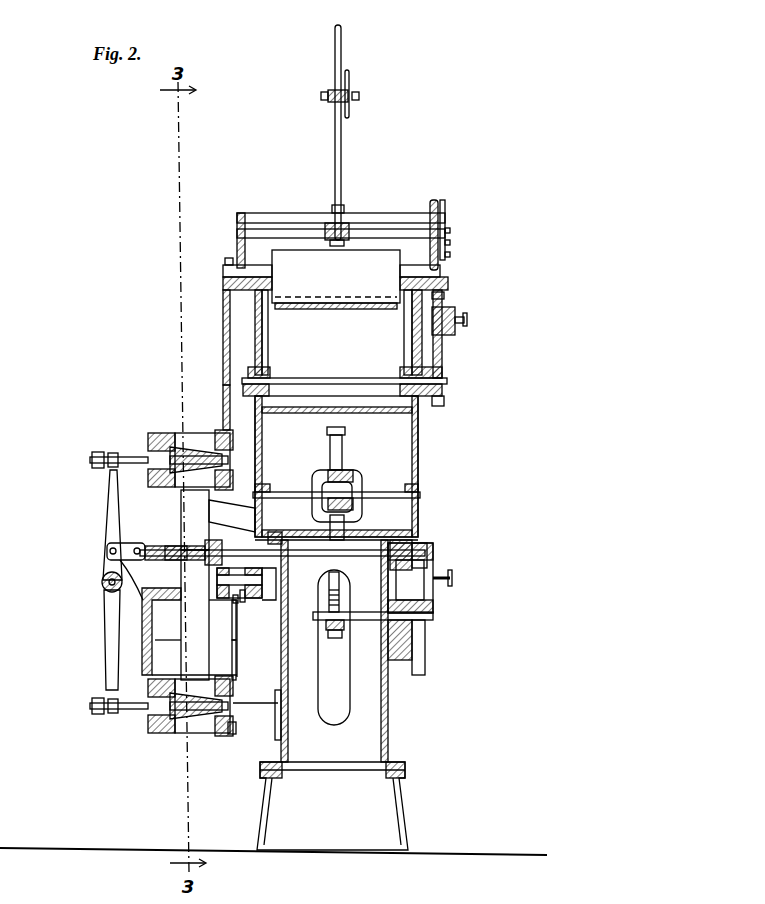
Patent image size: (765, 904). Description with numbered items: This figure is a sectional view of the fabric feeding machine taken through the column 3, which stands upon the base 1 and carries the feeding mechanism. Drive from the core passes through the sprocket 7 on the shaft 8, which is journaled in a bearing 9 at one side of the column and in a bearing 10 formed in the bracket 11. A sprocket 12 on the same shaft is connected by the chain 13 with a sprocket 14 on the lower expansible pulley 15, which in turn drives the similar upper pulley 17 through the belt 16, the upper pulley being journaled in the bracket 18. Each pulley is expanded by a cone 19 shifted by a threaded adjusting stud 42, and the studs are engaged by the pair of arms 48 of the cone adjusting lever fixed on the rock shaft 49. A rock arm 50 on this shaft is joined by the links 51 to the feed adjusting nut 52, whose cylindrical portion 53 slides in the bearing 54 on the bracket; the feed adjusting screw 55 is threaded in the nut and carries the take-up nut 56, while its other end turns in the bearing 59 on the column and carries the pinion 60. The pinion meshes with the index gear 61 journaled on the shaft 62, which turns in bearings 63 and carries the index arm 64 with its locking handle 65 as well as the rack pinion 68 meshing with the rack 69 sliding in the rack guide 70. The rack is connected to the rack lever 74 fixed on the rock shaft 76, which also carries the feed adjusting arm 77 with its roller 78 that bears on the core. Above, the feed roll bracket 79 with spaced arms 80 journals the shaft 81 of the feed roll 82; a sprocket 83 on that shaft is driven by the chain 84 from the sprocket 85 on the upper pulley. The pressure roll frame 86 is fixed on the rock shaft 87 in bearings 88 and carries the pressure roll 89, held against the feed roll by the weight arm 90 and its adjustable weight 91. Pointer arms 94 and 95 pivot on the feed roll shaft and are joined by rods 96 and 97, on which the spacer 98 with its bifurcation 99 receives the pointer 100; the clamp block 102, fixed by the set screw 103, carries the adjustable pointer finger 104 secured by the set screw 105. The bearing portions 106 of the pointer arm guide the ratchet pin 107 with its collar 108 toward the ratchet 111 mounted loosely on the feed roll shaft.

The base 1 is at (404, 812).
The column 3 is at (388, 744).
The sprocket 7 is at (237, 601).
The shaft 8 is at (265, 580).
The bearing 9 is at (243, 603).
The bearing 10 is at (196, 633).
The bracket 11 is at (143, 632).
The sprocket 12 is at (235, 606).
The chain 13 is at (236, 663).
The sprocket 14 is at (232, 734).
The pulley 15 is at (216, 742).
The belt 16 is at (180, 646).
The pulley 17 is at (165, 432).
The bracket 18 is at (237, 498).
The cone 19 is at (194, 430).
The threaded adjusting stud 42 is at (105, 456).
The arms of the cone adjusting lever 48 is at (110, 511).
The rock shaft 49 is at (102, 582).
The rock arm 50 is at (104, 572).
The links 51 is at (110, 548).
The feed adjusting nut 52 is at (118, 545).
The cylindrical portion 53 is at (108, 595).
The bearing 54 is at (167, 546).
The feed adjusting screw 55 is at (240, 552).
The take-up nut 56 is at (215, 542).
The bearing 59 is at (405, 541).
The pinion 60 is at (427, 546).
The index gear 61 is at (425, 667).
The shaft 62 is at (433, 617).
The bearings 63 is at (350, 672).
The index arm 64 is at (434, 593).
The locking handle 65 is at (452, 575).
The rack pinion 68 is at (333, 632).
The rack 69 is at (340, 595).
The rack guide 70 is at (343, 636).
The rack lever 74 is at (356, 516).
The rock shaft 76 is at (290, 494).
The feed adjusting arm 77 is at (342, 451).
The roller 78 is at (327, 431).
The feed roll bracket 79 is at (420, 451).
The spaced arms 80 is at (262, 343).
The shaft of the feed roll 81 is at (223, 275).
The feed roll 82 is at (358, 300).
The sprocket 83 is at (226, 260).
The chain 84 is at (223, 331).
The sprocket 85 is at (227, 405).
The pressure roll frame 86 is at (268, 327).
The rock shaft 87 is at (329, 378).
The bearings 88 is at (250, 368).
The pressure roll 89 is at (304, 296).
The weight arm 90 is at (442, 351).
The adjustable weight 91 is at (466, 322).
The pointer arm 94 is at (237, 242).
The pointer arm 95 is at (430, 208).
The rod 96 is at (275, 213).
The rod 97 is at (360, 229).
The spacer 98 is at (330, 226).
The bifurcation 99 is at (334, 206).
The pointer 100 is at (346, 144).
The clamp block 102 is at (333, 103).
The set screw 103 is at (321, 96).
The adjustable pointer finger 104 is at (351, 74).
The set screw 105 is at (359, 96).
The bearing portions 106 is at (450, 230).
The ratchet pin 107 is at (450, 243).
The collar 108 is at (450, 256).
The ratchet 111 is at (445, 296).